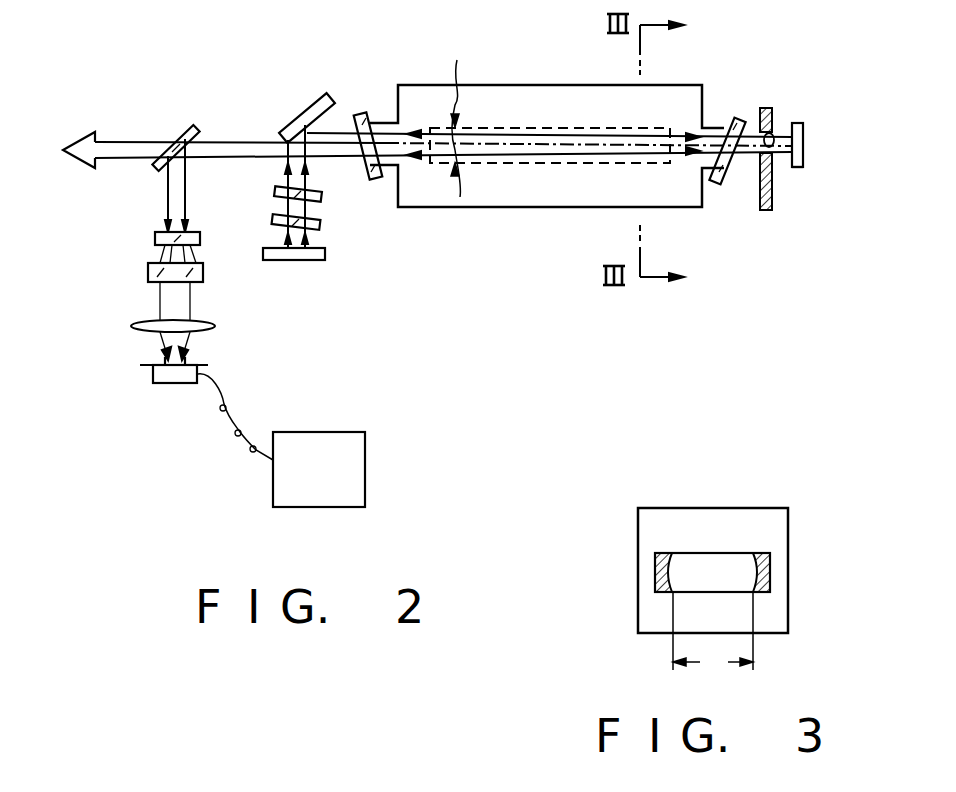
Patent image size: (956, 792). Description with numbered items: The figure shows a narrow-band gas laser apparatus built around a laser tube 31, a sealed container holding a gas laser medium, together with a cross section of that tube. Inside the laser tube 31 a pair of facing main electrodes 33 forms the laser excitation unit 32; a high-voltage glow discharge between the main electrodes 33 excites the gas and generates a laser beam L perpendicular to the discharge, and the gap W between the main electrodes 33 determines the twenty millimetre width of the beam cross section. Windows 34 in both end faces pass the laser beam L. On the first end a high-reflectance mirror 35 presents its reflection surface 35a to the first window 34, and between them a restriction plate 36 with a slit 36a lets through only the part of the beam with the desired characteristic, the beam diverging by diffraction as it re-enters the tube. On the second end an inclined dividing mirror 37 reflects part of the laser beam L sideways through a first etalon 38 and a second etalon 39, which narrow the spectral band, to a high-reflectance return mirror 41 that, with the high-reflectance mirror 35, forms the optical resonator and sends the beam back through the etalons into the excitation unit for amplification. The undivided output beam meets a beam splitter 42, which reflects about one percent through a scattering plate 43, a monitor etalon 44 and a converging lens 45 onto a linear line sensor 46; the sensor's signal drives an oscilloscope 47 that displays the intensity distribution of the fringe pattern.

In FIG. 2, the laser tube 31 is at (415, 84).
In FIG. 3, the laser tube 31 is at (675, 508).
In FIG. 2, the laser excitation unit 32 is at (548, 207).
In FIG. 3, the laser excitation unit 32 is at (738, 557).
In FIG. 3, the main electrodes 33 is at (655, 571).
In FIG. 2, the windows 34 is at (358, 117).
In FIG. 2, the high-reflectance mirror 35 is at (804, 142).
In FIG. 2, the reflection surface 35a is at (793, 168).
In FIG. 2, the restriction plate 36 is at (763, 107).
In FIG. 2, the slit 36a is at (777, 134).
In FIG. 2, the dividing mirror 37 is at (298, 118).
In FIG. 2, the first etalon 38 is at (322, 196).
In FIG. 2, the second etalon 39 is at (322, 226).
In FIG. 2, the high-reflectance return mirror 41 is at (302, 262).
In FIG. 2, the beam splitter 42 is at (182, 127).
In FIG. 2, the scattering plate 43 is at (156, 240).
In FIG. 2, the monitor etalon 44 is at (149, 270).
In FIG. 2, the converging lens 45 is at (145, 331).
In FIG. 2, the linear line sensor 46 is at (173, 386).
In FIG. 2, the oscilloscope 47 is at (365, 463).
In FIG. 2, the laser beam L is at (131, 146).
In FIG. 3, the gap between main electrodes W is at (713, 635).